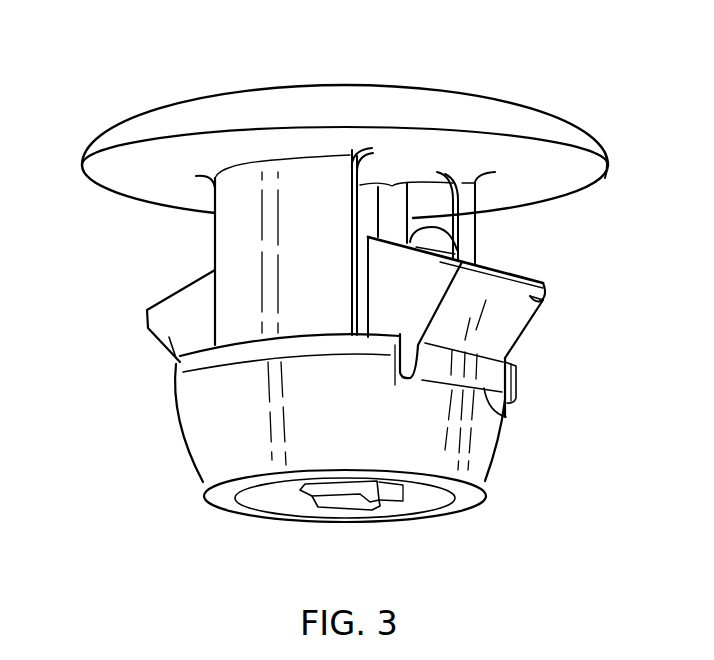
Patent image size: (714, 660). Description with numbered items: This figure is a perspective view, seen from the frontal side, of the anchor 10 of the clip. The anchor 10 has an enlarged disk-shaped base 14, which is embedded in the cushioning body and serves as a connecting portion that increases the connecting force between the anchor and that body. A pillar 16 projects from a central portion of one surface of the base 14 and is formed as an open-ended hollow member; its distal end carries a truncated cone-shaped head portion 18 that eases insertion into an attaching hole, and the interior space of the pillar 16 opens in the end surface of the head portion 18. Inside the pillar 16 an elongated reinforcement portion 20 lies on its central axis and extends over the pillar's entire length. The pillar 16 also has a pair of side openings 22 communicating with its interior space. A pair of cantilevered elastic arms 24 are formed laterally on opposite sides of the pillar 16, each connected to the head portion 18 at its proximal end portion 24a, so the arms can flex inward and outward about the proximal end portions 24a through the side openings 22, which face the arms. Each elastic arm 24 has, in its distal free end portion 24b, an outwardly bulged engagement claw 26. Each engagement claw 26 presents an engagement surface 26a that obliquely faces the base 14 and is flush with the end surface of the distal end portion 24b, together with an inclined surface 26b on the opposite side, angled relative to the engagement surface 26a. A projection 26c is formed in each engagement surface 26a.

The anchor 10 is at (96, 102).
The base 14 is at (520, 117).
The pillar 16 is at (250, 227).
The head portion 18 is at (225, 422).
The reinforcement portion 20 is at (347, 499).
The side openings 22 is at (433, 207).
The elastic arms 24 is at (472, 336).
The proximal end portions 24a is at (490, 408).
The distal end portions 24b is at (541, 299).
The engagement claws 26 is at (536, 290).
The engagement surfaces 26a is at (500, 268).
The inclined surfaces 26b is at (506, 295).
The projections 26c is at (420, 237).